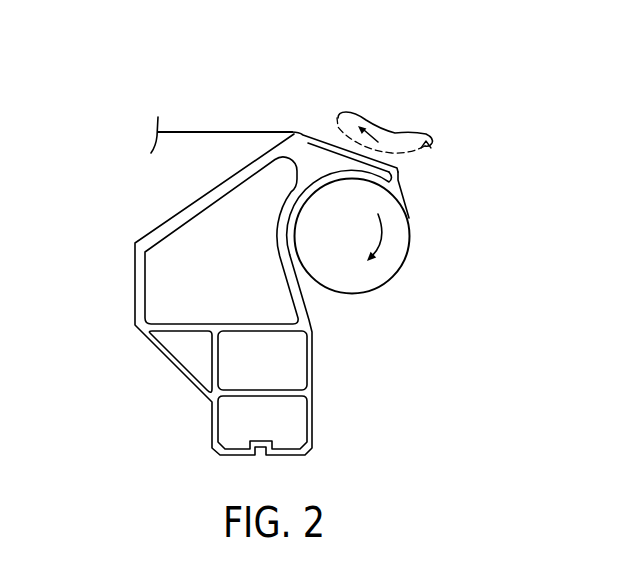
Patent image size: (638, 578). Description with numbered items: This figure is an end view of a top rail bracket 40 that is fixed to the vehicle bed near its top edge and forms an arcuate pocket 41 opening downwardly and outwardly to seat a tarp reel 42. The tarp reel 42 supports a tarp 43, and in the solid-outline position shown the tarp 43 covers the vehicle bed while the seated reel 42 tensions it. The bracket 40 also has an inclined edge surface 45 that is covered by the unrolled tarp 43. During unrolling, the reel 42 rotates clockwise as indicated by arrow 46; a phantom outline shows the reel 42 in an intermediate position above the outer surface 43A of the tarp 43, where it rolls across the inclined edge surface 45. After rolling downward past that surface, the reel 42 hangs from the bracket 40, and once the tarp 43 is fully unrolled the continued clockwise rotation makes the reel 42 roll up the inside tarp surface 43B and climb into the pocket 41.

The top rail bracket 40 is at (296, 243).
The arcuate pocket 41 is at (285, 236).
The tarp reel 42 is at (398, 273).
The tarp 43 is at (241, 132).
The outer surface of the tarp 43A is at (182, 132).
The inside tarp surface 43B is at (207, 132).
The inclined edge surface 45 is at (312, 138).
The arrow 46 is at (380, 237).